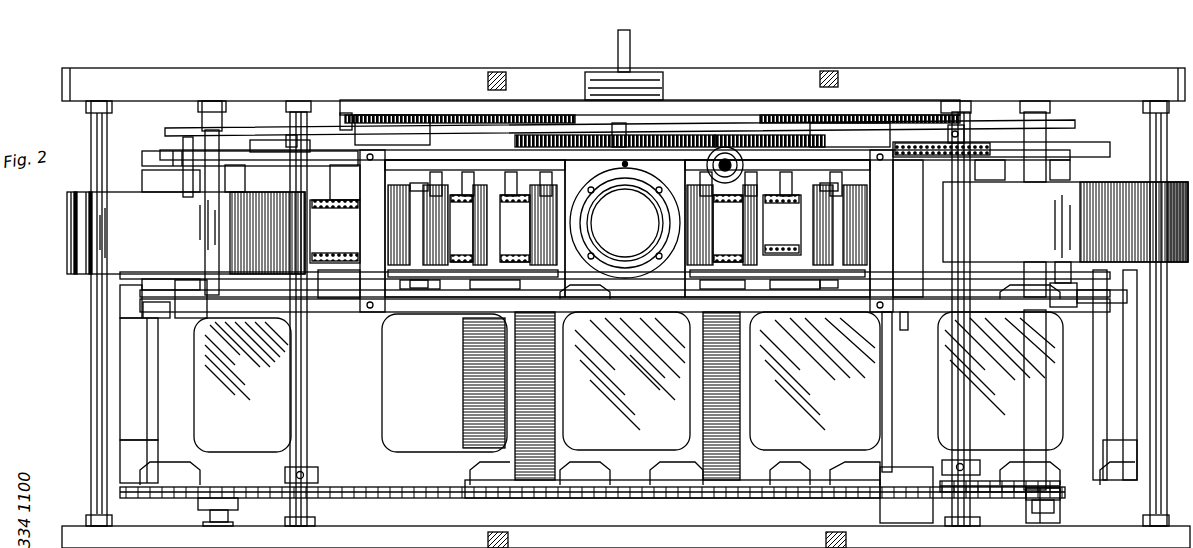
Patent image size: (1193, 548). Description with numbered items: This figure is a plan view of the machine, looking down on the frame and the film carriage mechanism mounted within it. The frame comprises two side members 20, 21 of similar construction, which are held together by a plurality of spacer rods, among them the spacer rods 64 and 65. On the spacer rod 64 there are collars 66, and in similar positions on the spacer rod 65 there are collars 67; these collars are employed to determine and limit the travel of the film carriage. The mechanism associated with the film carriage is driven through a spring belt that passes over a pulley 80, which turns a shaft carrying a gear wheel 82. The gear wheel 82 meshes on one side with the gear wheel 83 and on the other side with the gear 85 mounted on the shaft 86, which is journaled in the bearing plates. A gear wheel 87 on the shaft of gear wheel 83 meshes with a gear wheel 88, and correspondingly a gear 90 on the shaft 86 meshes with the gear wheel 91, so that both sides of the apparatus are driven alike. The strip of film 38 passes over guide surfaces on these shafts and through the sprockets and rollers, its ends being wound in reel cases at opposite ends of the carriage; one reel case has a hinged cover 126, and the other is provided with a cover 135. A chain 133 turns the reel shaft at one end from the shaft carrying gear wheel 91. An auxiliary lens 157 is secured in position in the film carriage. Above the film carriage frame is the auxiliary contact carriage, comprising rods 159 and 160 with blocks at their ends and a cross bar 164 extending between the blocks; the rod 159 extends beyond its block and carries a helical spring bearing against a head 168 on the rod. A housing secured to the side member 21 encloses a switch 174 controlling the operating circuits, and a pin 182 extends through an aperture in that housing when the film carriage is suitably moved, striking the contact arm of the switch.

The side member 20 is at (623, 84).
The side member 21 is at (626, 537).
The film 38 is at (555, 229).
The spacer rod 64 is at (972, 406).
The spacer rod 65 is at (294, 421).
The collar 66 is at (980, 464).
The collar 67 is at (285, 470).
The pulley 80 is at (662, 76).
The gear wheel 82 is at (604, 132).
The gear wheel 83 is at (735, 138).
The gear 85 is at (515, 139).
The shaft 86 is at (970, 136).
The gear wheel 87 is at (280, 141).
The gear wheel 88 is at (840, 112).
The gear 90 is at (545, 110).
The gear wheel 91 is at (400, 112).
The cover 126 is at (186, 233).
The chain 133 is at (375, 122).
The cover 135 is at (1065, 222).
The auxiliary lens 157 is at (590, 226).
The rod 159 is at (838, 147).
The rod 160 is at (838, 312).
The cross bar 164 is at (366, 312).
The head 168 is at (980, 160).
The switch 174 is at (906, 495).
The pin 182 is at (904, 330).